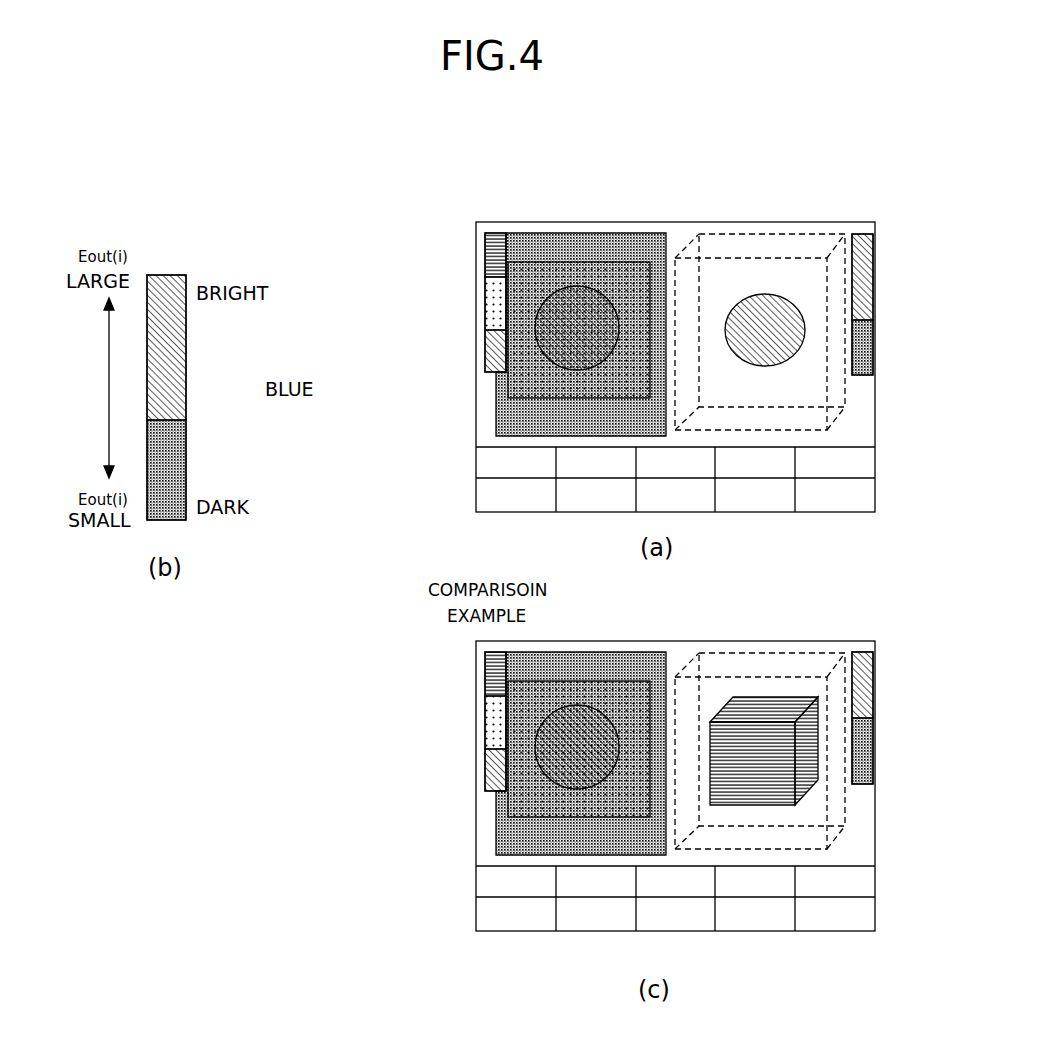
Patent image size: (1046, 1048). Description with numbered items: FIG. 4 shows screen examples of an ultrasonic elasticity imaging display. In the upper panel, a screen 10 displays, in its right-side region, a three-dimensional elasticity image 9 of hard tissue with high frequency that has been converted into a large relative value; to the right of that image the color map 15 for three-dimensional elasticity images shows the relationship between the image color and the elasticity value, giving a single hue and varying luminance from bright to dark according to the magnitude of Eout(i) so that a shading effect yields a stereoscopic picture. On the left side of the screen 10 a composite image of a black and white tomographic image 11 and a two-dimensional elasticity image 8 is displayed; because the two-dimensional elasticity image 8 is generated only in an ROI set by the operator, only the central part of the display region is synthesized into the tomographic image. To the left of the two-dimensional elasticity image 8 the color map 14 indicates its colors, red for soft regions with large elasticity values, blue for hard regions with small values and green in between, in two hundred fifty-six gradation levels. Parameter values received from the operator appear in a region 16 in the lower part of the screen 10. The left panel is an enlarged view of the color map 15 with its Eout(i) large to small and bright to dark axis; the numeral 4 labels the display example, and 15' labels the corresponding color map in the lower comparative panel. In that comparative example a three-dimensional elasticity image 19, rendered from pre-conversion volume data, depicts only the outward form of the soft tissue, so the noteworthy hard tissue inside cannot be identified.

The display region / light-emitting panel 4 is at (675, 553).
The 2-dimensional elasticity image 8 is at (518, 384).
The 3-dimensional elasticity image 9 is at (788, 352).
The screen 10 is at (798, 228).
The black and white tomographic image 11 is at (649, 254).
The color map 14 is at (490, 260).
The color map for 3-dimensional elasticity images 15 is at (510, 357).
The luminance bar (comparison example) 15' is at (859, 699).
The region 16 is at (884, 447).
The 3-dimensional elasticity image of comparative example 19 is at (805, 790).